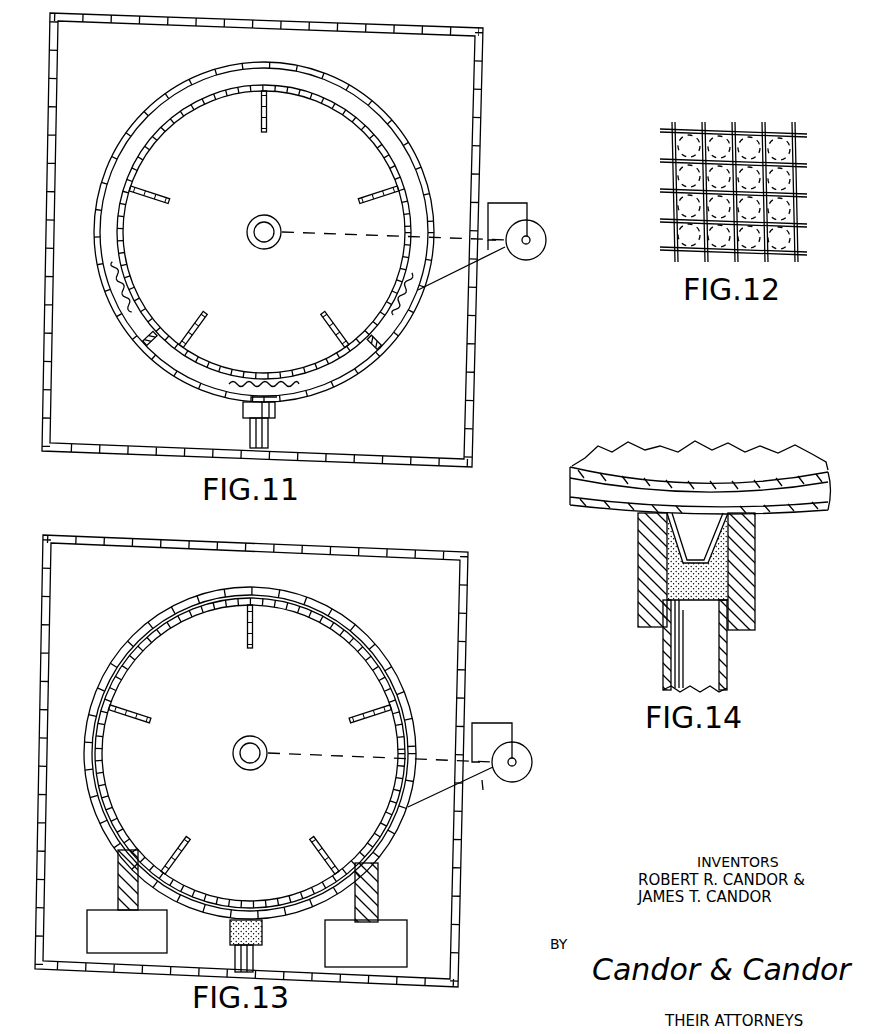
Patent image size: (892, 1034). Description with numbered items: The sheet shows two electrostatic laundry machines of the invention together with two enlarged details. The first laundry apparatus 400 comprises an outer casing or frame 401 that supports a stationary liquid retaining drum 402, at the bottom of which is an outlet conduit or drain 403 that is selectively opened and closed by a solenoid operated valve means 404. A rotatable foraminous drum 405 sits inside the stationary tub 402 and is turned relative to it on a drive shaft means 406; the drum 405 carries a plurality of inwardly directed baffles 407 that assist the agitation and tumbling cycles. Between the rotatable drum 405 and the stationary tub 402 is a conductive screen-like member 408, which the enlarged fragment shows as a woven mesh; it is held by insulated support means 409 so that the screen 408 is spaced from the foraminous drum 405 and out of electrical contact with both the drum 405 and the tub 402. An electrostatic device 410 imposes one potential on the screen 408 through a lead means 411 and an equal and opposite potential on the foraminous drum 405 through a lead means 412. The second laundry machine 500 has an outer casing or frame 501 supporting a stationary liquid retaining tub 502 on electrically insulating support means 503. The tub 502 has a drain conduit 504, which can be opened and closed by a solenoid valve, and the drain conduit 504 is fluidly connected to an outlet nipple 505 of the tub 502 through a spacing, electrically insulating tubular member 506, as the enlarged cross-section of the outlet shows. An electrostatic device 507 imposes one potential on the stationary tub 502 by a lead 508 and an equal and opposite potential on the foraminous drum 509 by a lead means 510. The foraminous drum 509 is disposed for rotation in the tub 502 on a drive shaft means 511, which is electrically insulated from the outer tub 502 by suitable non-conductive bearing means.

In FIG. 11, the laundry apparatus 400 is at (322, 240).
In FIG. 11, the outer casing or frame 401 is at (480, 143).
In FIG. 11, the stationary liquid retaining drum 402 is at (385, 118).
In FIG. 11, the outlet conduit or drain 403 is at (268, 436).
In FIG. 11, the solenoid operated valve means 404 is at (243, 412).
In FIG. 11, the rotatable foraminous drum 405 is at (323, 87).
In FIG. 11, the drive shaft means 406 is at (270, 226).
In FIG. 11, the inwardly directed baffles 407 is at (202, 316).
In FIG. 11, the conductive screen-like member 408 is at (400, 307).
In FIG. 12, the conductive screen-like member 408 is at (775, 130).
In FIG. 11, the insulated support means 409 is at (150, 340).
In FIG. 11, the electrostatic device 410 is at (546, 236).
In FIG. 11, the lead means 411 is at (489, 250).
In FIG. 11, the lead means 412 is at (510, 203).
In FIG. 13, the laundry machine 500 is at (314, 761).
In FIG. 13, the outer casing or frame 501 is at (468, 636).
In FIG. 13, the stationary liquid retaining tub or drum 502 is at (353, 622).
In FIG. 14, the stationary liquid retaining tub or drum 502 is at (632, 513).
In FIG. 13, the electrically insulating support means 503 is at (125, 880).
In FIG. 13, the drain conduit 504 is at (253, 958).
In FIG. 14, the drain conduit 504 is at (727, 665).
In FIG. 14, the outlet nipple 505 is at (755, 551).
In FIG. 13, the electrically insulating tubular member 506 is at (230, 934).
In FIG. 14, the electrically insulating tubular member 506 is at (745, 585).
In FIG. 13, the electrostatic device 507 is at (533, 758).
In FIG. 13, the lead 508 is at (482, 782).
In FIG. 13, the foraminous drum 509 is at (377, 658).
In FIG. 14, the foraminous drum 509 is at (620, 478).
In FIG. 13, the lead means 510 is at (500, 723).
In FIG. 13, the drive shaft means 511 is at (256, 748).